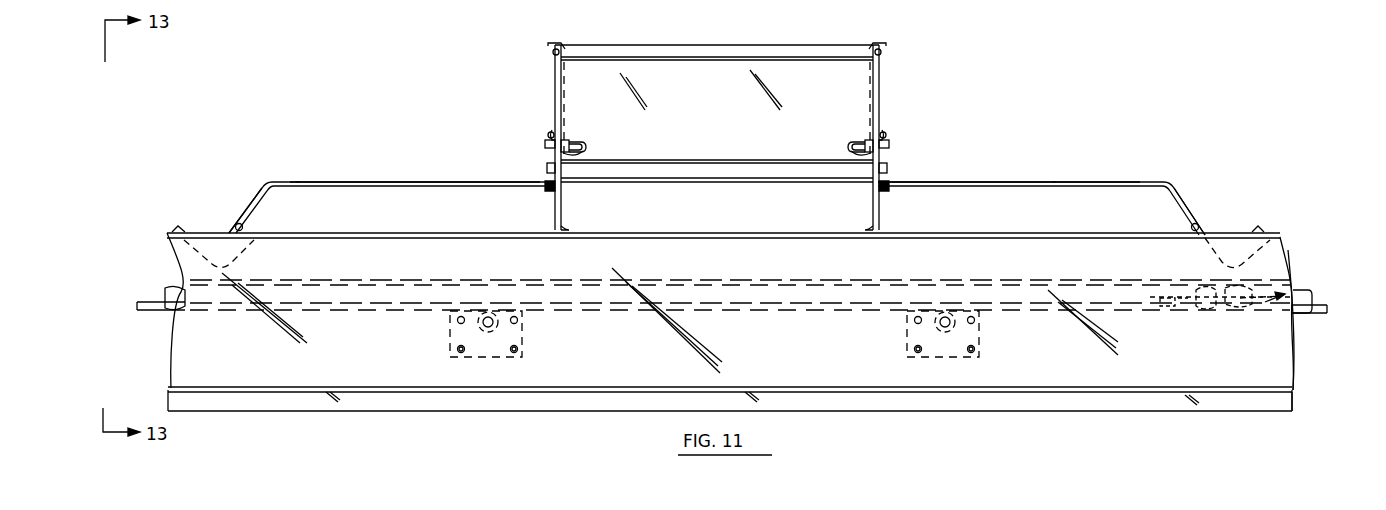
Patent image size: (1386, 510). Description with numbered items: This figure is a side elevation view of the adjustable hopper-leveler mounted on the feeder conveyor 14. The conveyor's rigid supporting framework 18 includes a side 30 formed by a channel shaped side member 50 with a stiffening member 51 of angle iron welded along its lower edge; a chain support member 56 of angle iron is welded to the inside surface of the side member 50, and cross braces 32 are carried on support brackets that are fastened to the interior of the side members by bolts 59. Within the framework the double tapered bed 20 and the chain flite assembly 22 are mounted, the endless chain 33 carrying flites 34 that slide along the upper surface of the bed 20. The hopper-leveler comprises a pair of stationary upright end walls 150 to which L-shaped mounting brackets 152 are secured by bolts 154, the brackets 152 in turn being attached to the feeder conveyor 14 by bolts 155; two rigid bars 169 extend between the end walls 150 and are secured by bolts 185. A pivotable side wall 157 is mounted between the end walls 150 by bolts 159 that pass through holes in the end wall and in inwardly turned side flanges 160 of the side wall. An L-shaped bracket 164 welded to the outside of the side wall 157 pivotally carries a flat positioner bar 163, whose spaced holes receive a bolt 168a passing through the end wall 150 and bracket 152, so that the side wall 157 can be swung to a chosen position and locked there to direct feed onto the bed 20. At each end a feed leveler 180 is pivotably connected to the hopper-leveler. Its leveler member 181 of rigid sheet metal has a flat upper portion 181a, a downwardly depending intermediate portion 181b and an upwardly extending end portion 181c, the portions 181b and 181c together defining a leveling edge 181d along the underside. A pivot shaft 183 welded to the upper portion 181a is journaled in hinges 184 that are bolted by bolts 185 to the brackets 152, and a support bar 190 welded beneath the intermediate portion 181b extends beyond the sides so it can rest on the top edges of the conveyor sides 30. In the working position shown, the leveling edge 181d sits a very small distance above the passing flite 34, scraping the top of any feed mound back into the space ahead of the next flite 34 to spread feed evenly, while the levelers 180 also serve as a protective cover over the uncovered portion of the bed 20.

The feeder conveyor 14 is at (1197, 362).
The supporting framework 18 is at (1104, 406).
The double tapered bed 20 is at (1328, 307).
The chain flite assembly 22 is at (1275, 284).
The side 30 is at (1268, 352).
The cross brace 32 is at (518, 330).
The chain 33 is at (1170, 292).
The flite 34 is at (1228, 292).
The side member 50 is at (185, 362).
The stiffening member 51 is at (178, 396).
The chain support member 56 is at (163, 293).
The bolt 59 is at (512, 352).
The end wall 150 is at (559, 43).
The mounting bracket 152 is at (553, 220).
The bolt 154 is at (548, 132).
The bolt 155 is at (568, 228).
The side wall 157 is at (806, 44).
The bolt 159 is at (552, 54).
The side flange 160 is at (567, 88).
The positioner bar 163 is at (583, 156).
The L-shaped bracket 164 is at (567, 144).
The bolt 168a is at (586, 145).
The rigid bar 169 is at (805, 168).
The feed leveler 180 is at (298, 178).
The leveler member 181 is at (420, 181).
The upper portion 181a is at (362, 181).
The intermediate portion 181b is at (251, 200).
The end portion 181c is at (176, 228).
The leveling edge 181d is at (215, 262).
The pivot shaft 183 is at (545, 188).
The hinge 184 is at (545, 142).
The bolt 185 is at (547, 168).
The support bar 190 is at (243, 226).